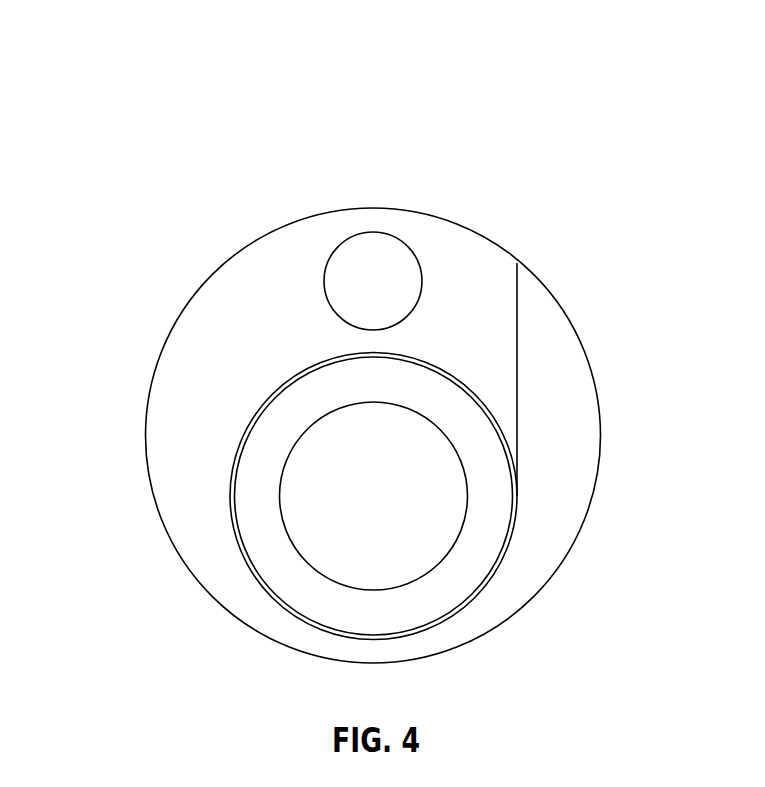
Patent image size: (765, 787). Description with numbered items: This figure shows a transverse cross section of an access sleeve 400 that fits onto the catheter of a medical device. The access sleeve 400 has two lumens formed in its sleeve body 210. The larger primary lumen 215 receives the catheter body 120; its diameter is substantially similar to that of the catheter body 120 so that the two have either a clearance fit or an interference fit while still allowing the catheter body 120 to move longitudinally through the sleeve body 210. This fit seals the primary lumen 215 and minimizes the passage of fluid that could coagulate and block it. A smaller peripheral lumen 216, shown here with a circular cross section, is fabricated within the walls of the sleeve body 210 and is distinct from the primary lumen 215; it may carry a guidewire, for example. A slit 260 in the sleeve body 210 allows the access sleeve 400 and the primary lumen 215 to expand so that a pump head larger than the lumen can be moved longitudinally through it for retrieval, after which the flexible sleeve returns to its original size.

The access sleeve 400 is at (509, 64).
The sleeve body 210 is at (242, 297).
The peripheral lumen 216 is at (373, 283).
The primary lumen 215 is at (250, 573).
The catheter body 120 is at (368, 479).
The slit 260 is at (517, 410).